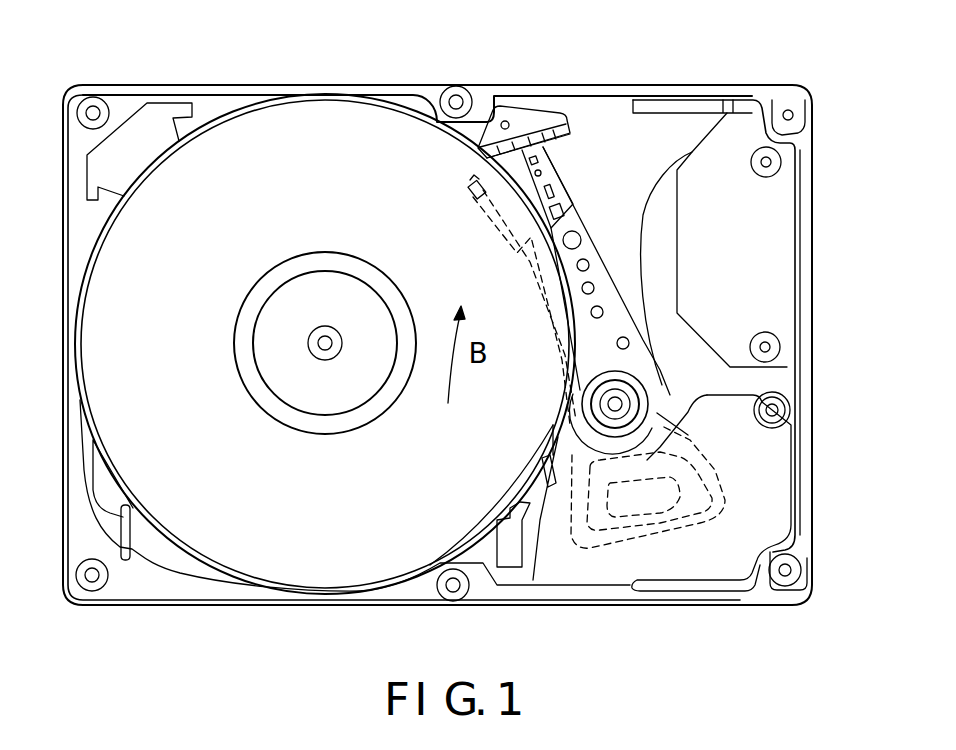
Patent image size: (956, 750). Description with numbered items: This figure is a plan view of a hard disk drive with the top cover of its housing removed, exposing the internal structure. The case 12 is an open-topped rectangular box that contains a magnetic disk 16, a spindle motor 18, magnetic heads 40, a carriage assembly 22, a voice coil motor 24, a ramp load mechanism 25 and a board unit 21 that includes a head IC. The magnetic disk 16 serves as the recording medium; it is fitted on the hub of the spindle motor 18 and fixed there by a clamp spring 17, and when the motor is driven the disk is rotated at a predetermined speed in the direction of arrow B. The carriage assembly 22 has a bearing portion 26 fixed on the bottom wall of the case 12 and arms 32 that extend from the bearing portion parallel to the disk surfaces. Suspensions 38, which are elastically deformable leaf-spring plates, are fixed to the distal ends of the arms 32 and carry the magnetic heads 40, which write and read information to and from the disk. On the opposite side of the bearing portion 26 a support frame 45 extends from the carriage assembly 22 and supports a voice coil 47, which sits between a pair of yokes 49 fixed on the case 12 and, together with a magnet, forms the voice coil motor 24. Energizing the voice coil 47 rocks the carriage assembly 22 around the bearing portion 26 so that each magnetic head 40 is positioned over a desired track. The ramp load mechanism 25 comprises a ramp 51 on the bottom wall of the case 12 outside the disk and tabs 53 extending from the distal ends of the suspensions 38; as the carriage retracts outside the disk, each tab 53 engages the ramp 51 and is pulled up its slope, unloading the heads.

The case 12 is at (246, 86).
The magnetic disk 16 is at (330, 113).
The clamp spring 17 is at (325, 400).
The spindle motor 18 is at (230, 352).
The board unit 21 is at (720, 142).
The carriage assembly 22 is at (600, 242).
The voice coil motor (VCM) 24 is at (557, 491).
The ramp load mechanism 25 is at (520, 110).
The bearing portion 26 is at (583, 408).
The arms 32 is at (617, 323).
The suspensions 38 is at (560, 183).
The magnetic heads 40 is at (470, 192).
The support frame 45 is at (712, 472).
The voice coil 47 is at (625, 523).
The yokes 49 is at (783, 462).
The ramp 51 is at (553, 117).
The tabs 53 is at (470, 182).